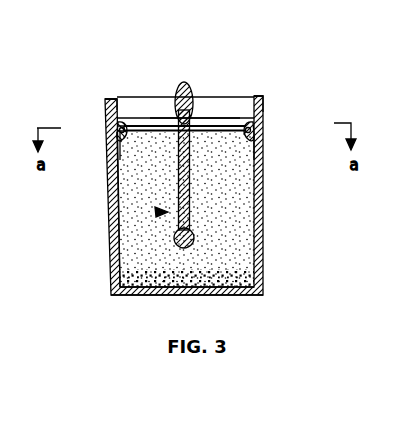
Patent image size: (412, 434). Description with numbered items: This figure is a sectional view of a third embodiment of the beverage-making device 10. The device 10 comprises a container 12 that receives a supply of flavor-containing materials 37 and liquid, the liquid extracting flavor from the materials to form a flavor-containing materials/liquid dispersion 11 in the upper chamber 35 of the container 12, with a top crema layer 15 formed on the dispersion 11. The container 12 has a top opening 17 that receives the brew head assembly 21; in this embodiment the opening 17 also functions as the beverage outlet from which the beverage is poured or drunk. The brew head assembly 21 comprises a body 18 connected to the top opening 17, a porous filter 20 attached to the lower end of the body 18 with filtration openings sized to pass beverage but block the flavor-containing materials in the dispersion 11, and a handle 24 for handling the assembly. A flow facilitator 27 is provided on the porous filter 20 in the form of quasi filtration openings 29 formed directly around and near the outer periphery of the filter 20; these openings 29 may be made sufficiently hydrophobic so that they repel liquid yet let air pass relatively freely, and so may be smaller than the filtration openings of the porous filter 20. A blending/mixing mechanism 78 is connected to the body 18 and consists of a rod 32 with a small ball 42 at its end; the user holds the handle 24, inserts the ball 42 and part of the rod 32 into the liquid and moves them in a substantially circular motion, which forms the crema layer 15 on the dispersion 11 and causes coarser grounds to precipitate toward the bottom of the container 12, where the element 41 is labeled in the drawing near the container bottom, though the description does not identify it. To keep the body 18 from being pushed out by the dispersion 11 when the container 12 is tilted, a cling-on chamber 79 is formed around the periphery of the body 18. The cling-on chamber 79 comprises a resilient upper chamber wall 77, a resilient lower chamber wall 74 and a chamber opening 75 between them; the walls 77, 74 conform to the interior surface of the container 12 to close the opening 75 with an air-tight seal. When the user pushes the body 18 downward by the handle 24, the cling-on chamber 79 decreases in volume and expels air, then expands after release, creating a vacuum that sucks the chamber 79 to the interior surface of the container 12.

The device for making beverages 10 is at (193, 177).
The flavor-containing materials/liquid dispersion 11 is at (128, 183).
The container 12 is at (100, 253).
The top crema layer 15 is at (128, 145).
The top opening 17 is at (107, 100).
The body 18 is at (123, 124).
The porous filter 20 is at (147, 124).
The brew head assembly 21 is at (165, 108).
The handle 24 is at (192, 87).
The flow facilitator 27 is at (231, 108).
The quasi filtration openings 29 is at (240, 128).
The rod 32 is at (191, 191).
The upper chamber 35 is at (243, 242).
The flavor-containing materials 37 is at (240, 268).
The bottom wall 41 is at (128, 296).
The ball 42 is at (195, 240).
The lower chamber wall 74 is at (264, 137).
The chamber opening 75 is at (258, 128).
The upper chamber wall 77 is at (264, 115).
The blending/mixing mechanism 78 is at (157, 212).
The cling-on chamber 79 is at (102, 126).